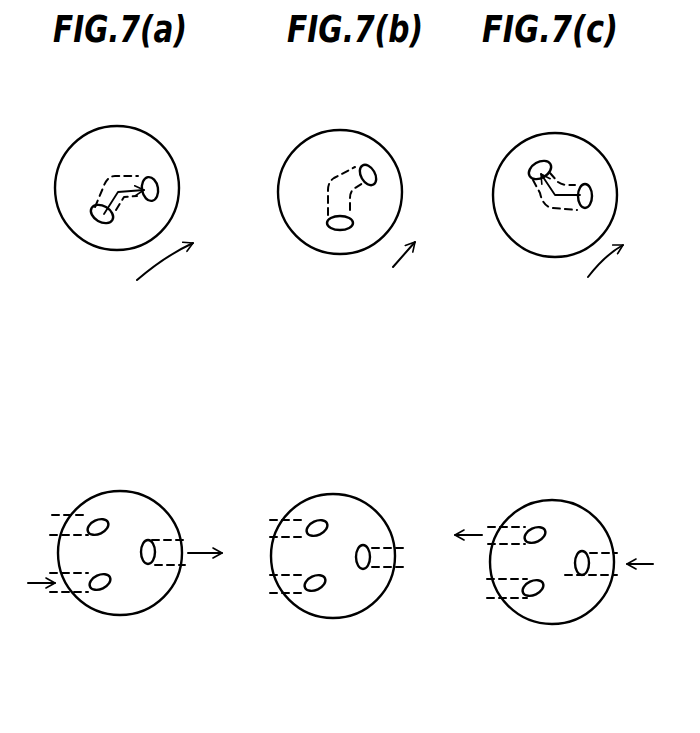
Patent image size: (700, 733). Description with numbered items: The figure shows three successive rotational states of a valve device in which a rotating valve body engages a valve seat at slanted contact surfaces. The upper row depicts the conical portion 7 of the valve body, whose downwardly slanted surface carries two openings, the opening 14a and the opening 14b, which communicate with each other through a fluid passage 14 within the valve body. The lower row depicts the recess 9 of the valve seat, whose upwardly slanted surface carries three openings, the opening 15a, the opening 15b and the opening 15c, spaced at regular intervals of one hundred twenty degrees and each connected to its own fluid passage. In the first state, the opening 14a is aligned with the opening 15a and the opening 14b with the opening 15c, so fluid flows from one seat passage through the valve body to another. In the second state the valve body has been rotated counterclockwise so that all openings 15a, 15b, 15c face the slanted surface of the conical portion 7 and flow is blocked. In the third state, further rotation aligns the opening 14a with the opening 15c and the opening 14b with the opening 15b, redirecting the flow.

In FIG. 7A, the conical portion 7 is at (128, 142).
In FIG. 7B, the conical portion 7 is at (343, 145).
In FIG. 7C, the conical portion 7 is at (567, 143).
In FIG. 7C, the passage 14 is at (683, 274).
In FIG. 7A, the opening 14a is at (102, 215).
In FIG. 7B, the opening 14a is at (342, 223).
In FIG. 7C, the opening 14a is at (588, 190).
In FIG. 7A, the opening 14b is at (155, 182).
In FIG. 7B, the opening 14b is at (367, 178).
In FIG. 7C, the opening 14b is at (533, 169).
In FIG. 7A, the recess 9 is at (145, 517).
In FIG. 7B, the recess 9 is at (353, 520).
In FIG. 7C, the recess 9 is at (572, 532).
In FIG. 7A, the opening 15a is at (101, 584).
In FIG. 7B, the opening 15a is at (315, 584).
In FIG. 7C, the opening 15a is at (534, 589).
In FIG. 7A, the opening 15b is at (99, 520).
In FIG. 7B, the opening 15b is at (316, 523).
In FIG. 7C, the opening 15b is at (537, 533).
In FIG. 7A, the opening 15c is at (152, 547).
In FIG. 7B, the opening 15c is at (367, 553).
In FIG. 7C, the opening 15c is at (585, 560).